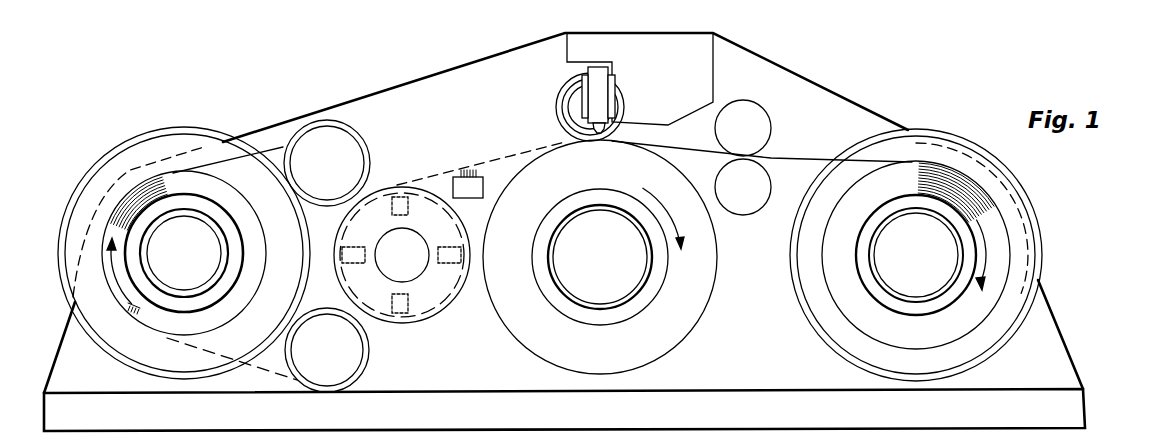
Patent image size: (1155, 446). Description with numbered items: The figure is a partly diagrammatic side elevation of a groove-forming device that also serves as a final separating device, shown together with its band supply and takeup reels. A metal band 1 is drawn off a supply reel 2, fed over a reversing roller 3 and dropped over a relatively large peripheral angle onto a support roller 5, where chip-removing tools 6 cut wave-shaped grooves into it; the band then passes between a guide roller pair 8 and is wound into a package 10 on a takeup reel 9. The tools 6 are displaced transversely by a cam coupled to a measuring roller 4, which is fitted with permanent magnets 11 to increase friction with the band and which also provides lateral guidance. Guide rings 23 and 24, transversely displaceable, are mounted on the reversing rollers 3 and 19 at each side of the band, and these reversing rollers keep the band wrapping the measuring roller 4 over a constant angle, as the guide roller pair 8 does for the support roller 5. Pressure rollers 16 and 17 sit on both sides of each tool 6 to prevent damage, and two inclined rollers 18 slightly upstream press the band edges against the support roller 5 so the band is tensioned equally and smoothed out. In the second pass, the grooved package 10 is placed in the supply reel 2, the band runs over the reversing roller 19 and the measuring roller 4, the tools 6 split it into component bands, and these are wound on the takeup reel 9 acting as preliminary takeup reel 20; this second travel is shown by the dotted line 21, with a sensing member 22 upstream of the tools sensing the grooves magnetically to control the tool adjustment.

The metal band 1 is at (257, 148).
The supply reel 2 is at (118, 152).
The reversing roller 3 is at (333, 147).
The measuring roller 4 is at (402, 233).
The support roller 5 is at (528, 315).
The chip-removing tools 6 is at (618, 122).
The guide roller pair 8 is at (754, 120).
The takeup reel 9 is at (905, 137).
The package 10 is at (995, 244).
The permanent magnets 11 is at (401, 200).
The pressure roller 16 is at (582, 125).
The pressure roller 17 is at (578, 118).
The inclined rollers 18 is at (573, 97).
The reversing roller 19 is at (342, 358).
The preliminary takeup reel 20 is at (916, 211).
The dotted line 21 is at (273, 375).
The sensing member 22 is at (467, 186).
The guide ring 23 is at (360, 150).
The guide ring 24 is at (367, 338).